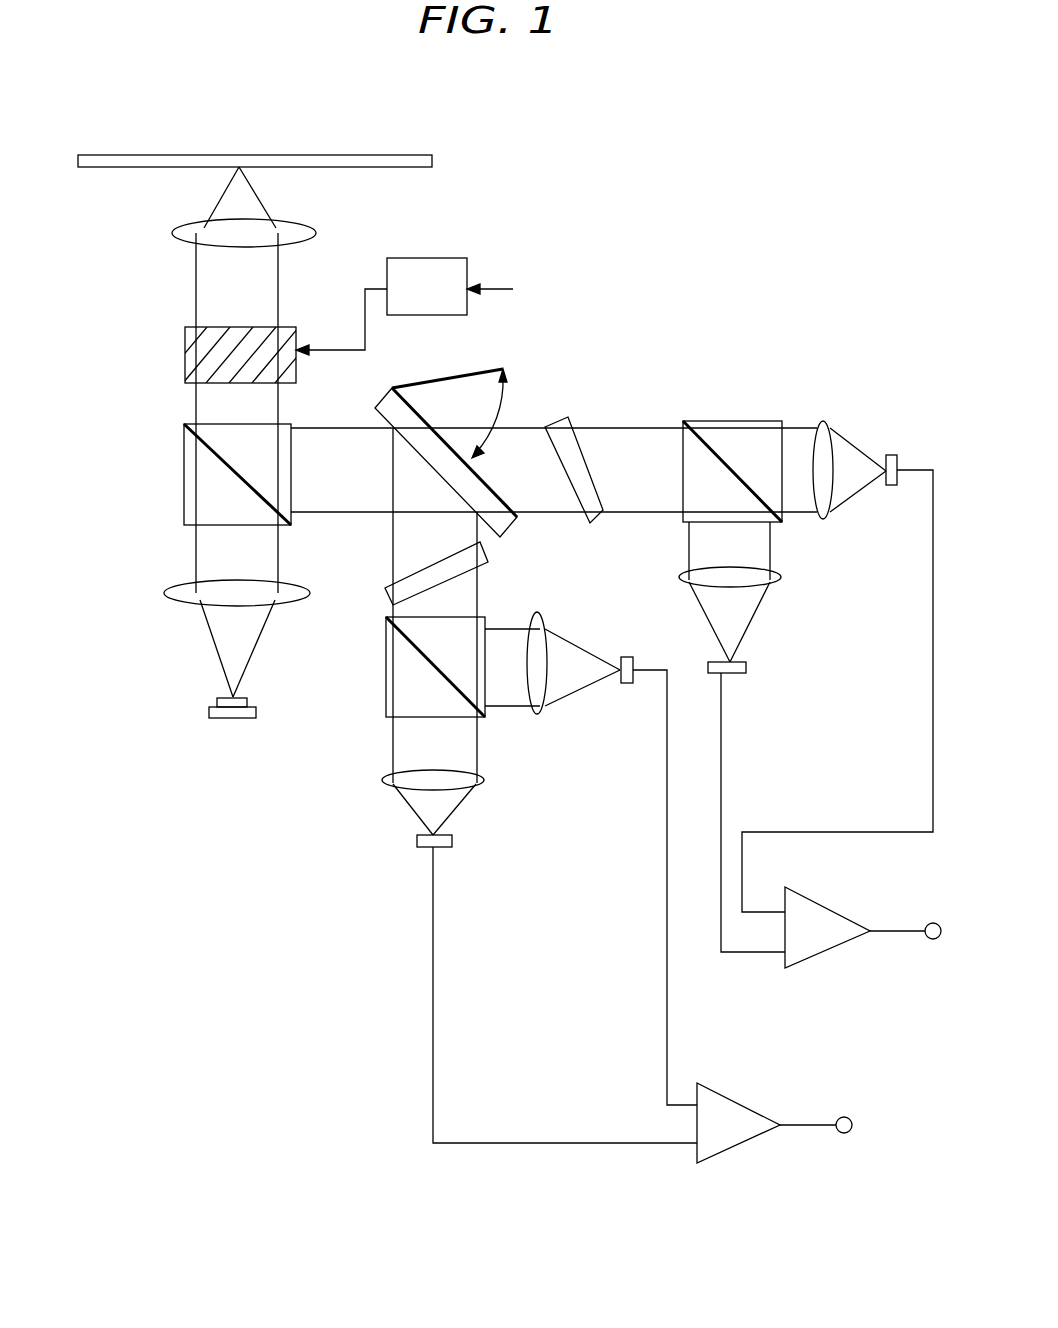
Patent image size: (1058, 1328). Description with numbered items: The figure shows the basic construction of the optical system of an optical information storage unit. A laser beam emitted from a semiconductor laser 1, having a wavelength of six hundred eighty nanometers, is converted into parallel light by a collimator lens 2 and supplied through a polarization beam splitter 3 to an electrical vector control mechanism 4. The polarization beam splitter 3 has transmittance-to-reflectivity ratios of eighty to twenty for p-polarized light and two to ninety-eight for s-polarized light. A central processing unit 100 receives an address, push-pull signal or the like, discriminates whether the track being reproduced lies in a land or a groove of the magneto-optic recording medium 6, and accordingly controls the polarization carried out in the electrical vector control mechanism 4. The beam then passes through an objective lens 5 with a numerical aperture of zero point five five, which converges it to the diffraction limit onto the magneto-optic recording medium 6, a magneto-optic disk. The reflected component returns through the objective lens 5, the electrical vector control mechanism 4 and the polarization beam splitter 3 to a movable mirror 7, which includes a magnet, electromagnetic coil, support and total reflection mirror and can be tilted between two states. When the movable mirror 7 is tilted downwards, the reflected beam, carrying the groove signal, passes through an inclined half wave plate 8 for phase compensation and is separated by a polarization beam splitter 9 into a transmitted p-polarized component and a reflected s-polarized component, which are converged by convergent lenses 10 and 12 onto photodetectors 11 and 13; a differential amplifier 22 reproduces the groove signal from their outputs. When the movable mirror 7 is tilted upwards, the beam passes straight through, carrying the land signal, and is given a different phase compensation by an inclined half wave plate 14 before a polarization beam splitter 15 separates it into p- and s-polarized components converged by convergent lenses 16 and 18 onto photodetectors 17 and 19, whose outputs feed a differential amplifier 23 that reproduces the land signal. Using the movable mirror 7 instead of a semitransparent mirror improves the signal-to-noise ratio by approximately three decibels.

The semiconductor laser 1 is at (213, 720).
The collimator lens 2 is at (178, 603).
The polarization beam splitter 3 is at (184, 480).
The electrical vector control mechanism 4 is at (185, 350).
The objective lens 5 is at (300, 243).
The magneto-optic recording medium 6 is at (410, 170).
The movable mirror 7 is at (383, 392).
The ½ wave plate 8 is at (488, 557).
The polarization beam splitter 9 is at (386, 687).
The convergent lens 10 is at (480, 782).
The photodetector 11 is at (452, 840).
The convergent lens 12 is at (537, 713).
The photodetector 13 is at (625, 655).
The ½ wave plate 14 is at (568, 413).
The polarization beam splitter 15 is at (729, 418).
The convergent lens 16 is at (777, 582).
The photodetector 17 is at (745, 675).
The convergent lens 18 is at (828, 420).
The photodetector 19 is at (890, 487).
The differential amplifier 22 is at (745, 1147).
The differential amplifier 23 is at (822, 955).
The central processing unit 100 is at (457, 257).